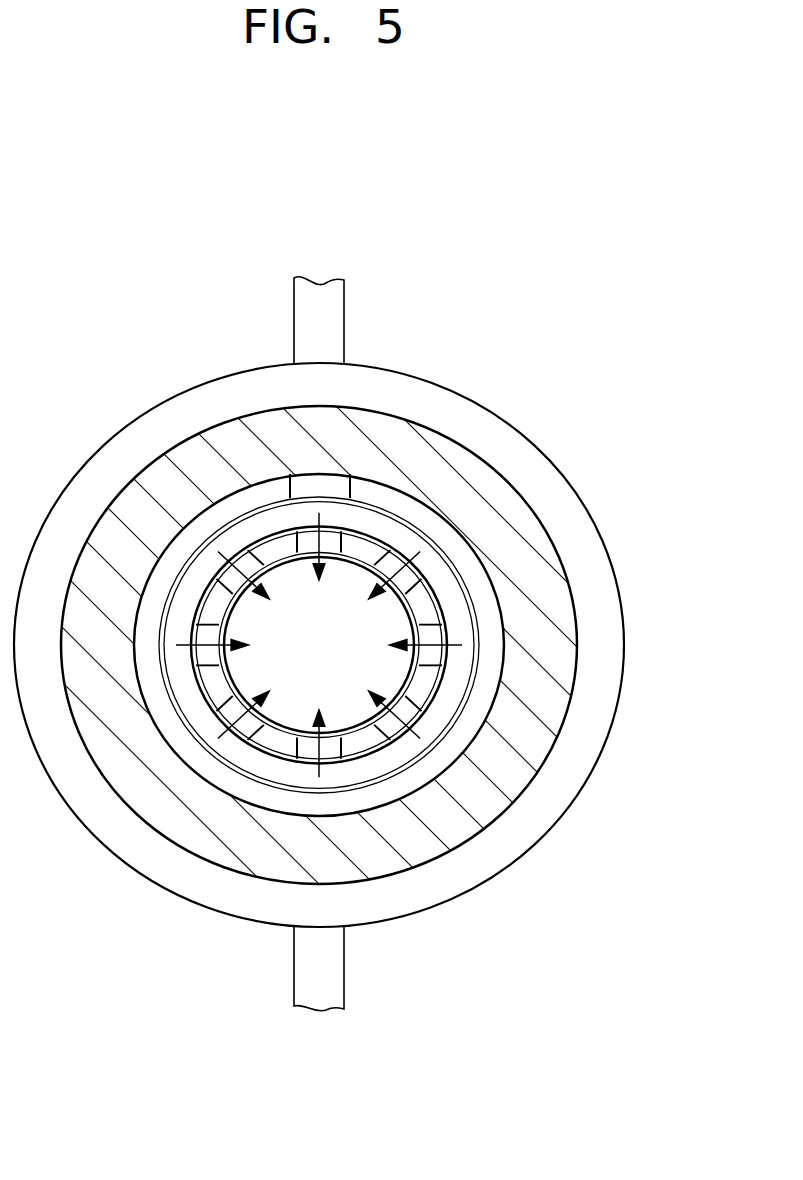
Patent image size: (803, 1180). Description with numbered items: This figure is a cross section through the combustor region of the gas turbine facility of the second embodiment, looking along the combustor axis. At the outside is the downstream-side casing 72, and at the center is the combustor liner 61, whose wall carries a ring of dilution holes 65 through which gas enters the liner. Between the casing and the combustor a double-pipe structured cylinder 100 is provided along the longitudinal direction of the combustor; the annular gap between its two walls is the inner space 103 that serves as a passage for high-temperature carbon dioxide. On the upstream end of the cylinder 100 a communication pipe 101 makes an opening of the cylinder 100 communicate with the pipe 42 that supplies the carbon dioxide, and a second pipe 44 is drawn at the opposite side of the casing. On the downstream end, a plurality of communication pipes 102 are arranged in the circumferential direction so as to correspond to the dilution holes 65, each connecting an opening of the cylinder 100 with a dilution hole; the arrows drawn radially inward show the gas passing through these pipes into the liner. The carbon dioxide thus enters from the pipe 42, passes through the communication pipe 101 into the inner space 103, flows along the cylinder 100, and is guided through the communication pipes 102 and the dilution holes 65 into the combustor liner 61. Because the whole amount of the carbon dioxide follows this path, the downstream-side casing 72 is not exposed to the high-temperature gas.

The pipe 42 is at (317, 321).
The outlet pipe 44 is at (318, 970).
The downstream-side casing 72 is at (518, 447).
The combustor liner 61 is at (412, 597).
The dilution holes 65 is at (412, 630).
The cylinder 100 is at (428, 758).
The communication pipe 101 is at (333, 487).
The communication pipes 102 is at (345, 744).
The inner space 103 is at (198, 710).